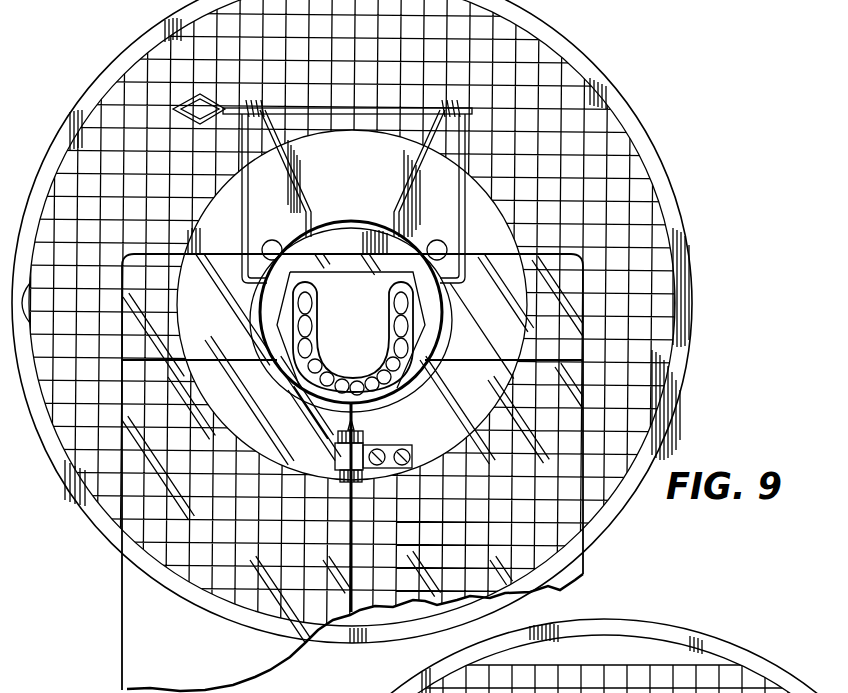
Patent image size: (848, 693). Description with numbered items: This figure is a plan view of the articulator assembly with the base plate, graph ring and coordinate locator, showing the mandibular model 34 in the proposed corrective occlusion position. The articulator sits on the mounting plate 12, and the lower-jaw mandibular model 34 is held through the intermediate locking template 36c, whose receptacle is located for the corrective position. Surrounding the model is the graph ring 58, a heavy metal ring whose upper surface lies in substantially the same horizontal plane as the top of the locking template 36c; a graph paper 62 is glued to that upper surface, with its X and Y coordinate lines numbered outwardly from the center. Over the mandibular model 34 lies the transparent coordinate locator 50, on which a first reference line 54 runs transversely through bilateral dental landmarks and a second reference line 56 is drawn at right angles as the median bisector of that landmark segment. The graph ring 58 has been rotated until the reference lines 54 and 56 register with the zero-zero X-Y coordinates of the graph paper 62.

The mounting plate 12 is at (362, 177).
The graph ring 58 is at (662, 217).
The graph paper 62 is at (659, 263).
The coordinate locator 50 is at (120, 652).
The first reference line 54 is at (233, 357).
The intermediate locking template 36c is at (412, 383).
The mandibular model 34 is at (362, 341).
The second reference line 56 is at (350, 603).